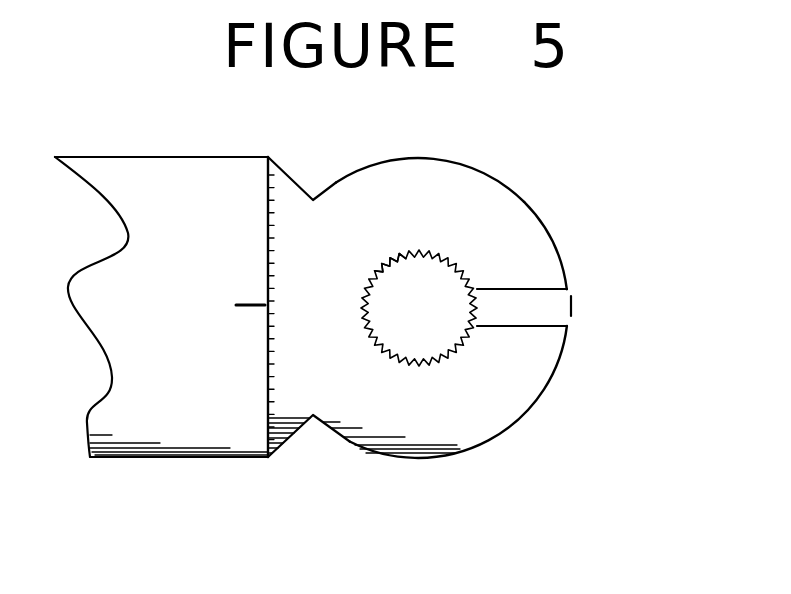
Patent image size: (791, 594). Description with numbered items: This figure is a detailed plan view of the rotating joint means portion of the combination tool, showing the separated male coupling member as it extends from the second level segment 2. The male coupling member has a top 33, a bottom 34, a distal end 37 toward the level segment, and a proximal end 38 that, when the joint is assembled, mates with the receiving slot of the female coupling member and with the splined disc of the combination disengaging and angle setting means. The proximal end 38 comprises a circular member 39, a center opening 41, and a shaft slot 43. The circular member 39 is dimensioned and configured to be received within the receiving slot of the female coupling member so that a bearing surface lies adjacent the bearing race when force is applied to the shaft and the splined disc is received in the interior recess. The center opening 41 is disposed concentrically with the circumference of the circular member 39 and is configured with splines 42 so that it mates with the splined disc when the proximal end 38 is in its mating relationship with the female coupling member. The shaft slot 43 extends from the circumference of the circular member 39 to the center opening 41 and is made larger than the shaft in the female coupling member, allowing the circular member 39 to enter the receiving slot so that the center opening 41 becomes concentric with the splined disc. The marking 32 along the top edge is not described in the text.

The second level segment 2 is at (161, 307).
The top edge of body 32 is at (164, 132).
The top 33 is at (384, 160).
The bottom 34 is at (456, 457).
The distal end 37 is at (267, 259).
The proximal end 38 is at (571, 302).
The circular member 39 is at (604, 222).
The center opening 41 is at (419, 308).
The splines 42 is at (380, 260).
The shaft slot 43 is at (522, 313).